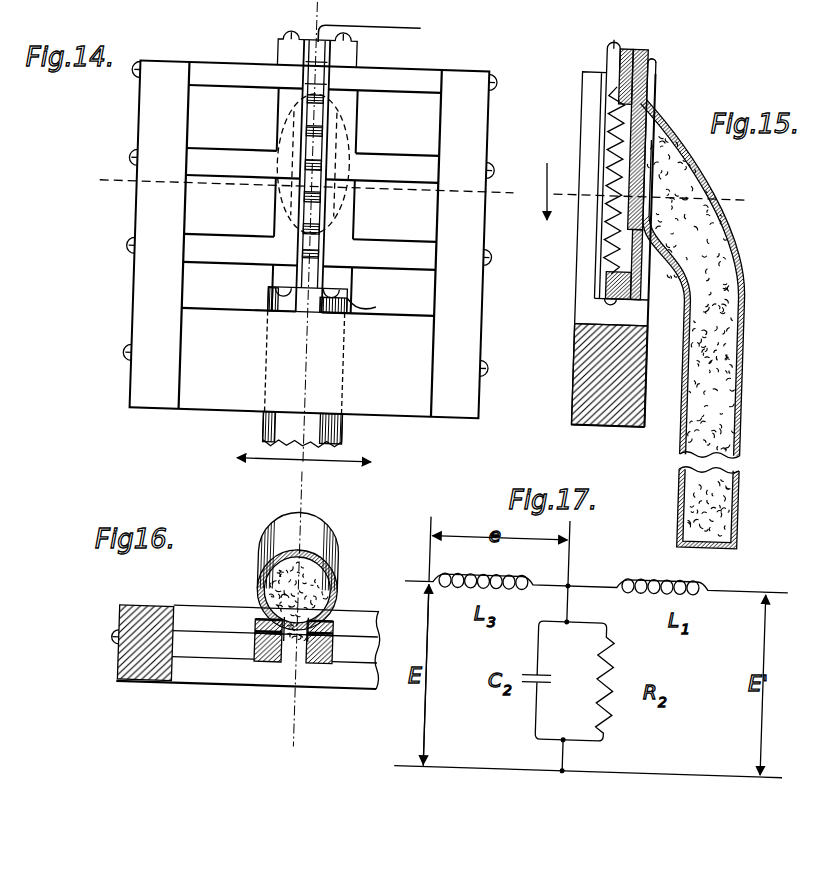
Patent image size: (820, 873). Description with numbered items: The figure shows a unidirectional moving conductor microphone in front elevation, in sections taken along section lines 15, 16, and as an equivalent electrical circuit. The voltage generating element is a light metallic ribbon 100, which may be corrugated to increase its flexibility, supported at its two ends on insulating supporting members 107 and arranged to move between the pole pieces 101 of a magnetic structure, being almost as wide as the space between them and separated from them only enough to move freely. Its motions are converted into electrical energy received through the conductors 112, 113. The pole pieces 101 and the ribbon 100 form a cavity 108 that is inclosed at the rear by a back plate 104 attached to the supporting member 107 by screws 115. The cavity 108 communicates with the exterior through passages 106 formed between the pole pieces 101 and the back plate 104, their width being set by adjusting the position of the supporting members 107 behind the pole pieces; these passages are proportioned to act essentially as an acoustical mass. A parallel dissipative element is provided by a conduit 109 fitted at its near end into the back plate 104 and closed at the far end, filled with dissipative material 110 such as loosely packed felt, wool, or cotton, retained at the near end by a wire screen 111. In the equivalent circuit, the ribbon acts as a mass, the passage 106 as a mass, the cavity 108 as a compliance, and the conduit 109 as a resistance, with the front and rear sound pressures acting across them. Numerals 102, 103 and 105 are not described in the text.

In FIG. 14, the ribbon 100 is at (272, 185).
In FIG. 15, the ribbon 100 is at (604, 99).
In FIG. 16, the ribbon 100 is at (296, 653).
In FIG. 14, the pole pieces 101 is at (283, 98).
In FIG. 16, the pole pieces 101 is at (263, 658).
In FIG. 14, the cross bar 102 is at (222, 72).
In FIG. 16, the cross bar 102 is at (203, 650).
In FIG. 14, the base plate 103 is at (218, 398).
In FIG. 16, the base plate 103 is at (204, 617).
In FIG. 15, the back plate 104 is at (647, 110).
In FIG. 16, the back plate 104 is at (318, 607).
In FIG. 14, the housing frame 105 is at (157, 198).
In FIG. 15, the housing frame 105 is at (587, 148).
In FIG. 16, the housing frame 105 is at (120, 622).
In FIG. 15, the passages 106 is at (657, 89).
In FIG. 16, the passages 106 is at (262, 637).
In FIG. 15, the supporting members 107 is at (632, 45).
In FIG. 15, the cavity 108 is at (617, 87).
In FIG. 16, the cavity 108 is at (334, 642).
In FIG. 14, the conduit 109 is at (344, 429).
In FIG. 15, the conduit 109 is at (722, 243).
In FIG. 16, the conduit 109 is at (283, 528).
In FIG. 15, the dissipative material 110 is at (741, 283).
In FIG. 16, the dissipative material 110 is at (327, 546).
In FIG. 15, the wire screen 111 is at (640, 185).
In FIG. 16, the wire screen 111 is at (291, 656).
In FIG. 14, the conductor 112 is at (352, 298).
In FIG. 14, the conductor 113 is at (374, 30).
In FIG. 15, the screws 115 is at (660, 71).
In FIG. 14, the section line 15 is at (304, 474).
In FIG. 14, the section line 16 is at (423, 191).